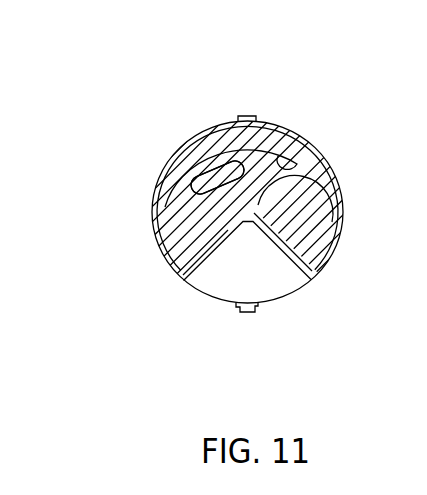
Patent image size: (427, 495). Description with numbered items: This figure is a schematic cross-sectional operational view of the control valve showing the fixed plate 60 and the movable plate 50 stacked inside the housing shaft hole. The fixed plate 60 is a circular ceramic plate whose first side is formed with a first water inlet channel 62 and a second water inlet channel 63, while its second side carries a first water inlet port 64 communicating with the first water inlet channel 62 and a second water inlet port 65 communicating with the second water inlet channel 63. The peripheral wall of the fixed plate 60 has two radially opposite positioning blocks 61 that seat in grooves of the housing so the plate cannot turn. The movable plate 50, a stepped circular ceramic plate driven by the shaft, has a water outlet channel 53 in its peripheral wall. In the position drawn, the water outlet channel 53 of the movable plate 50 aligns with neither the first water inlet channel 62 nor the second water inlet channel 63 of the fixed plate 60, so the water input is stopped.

The movable plate 50 is at (205, 126).
The water outlet channel 53 is at (277, 242).
The fixed plate 60 is at (196, 295).
The positioning block 61 is at (247, 312).
The first water inlet channel 62 is at (308, 168).
The second water inlet channel 63 is at (183, 210).
The first water inlet port 64 is at (319, 226).
The second water inlet port 65 is at (147, 179).